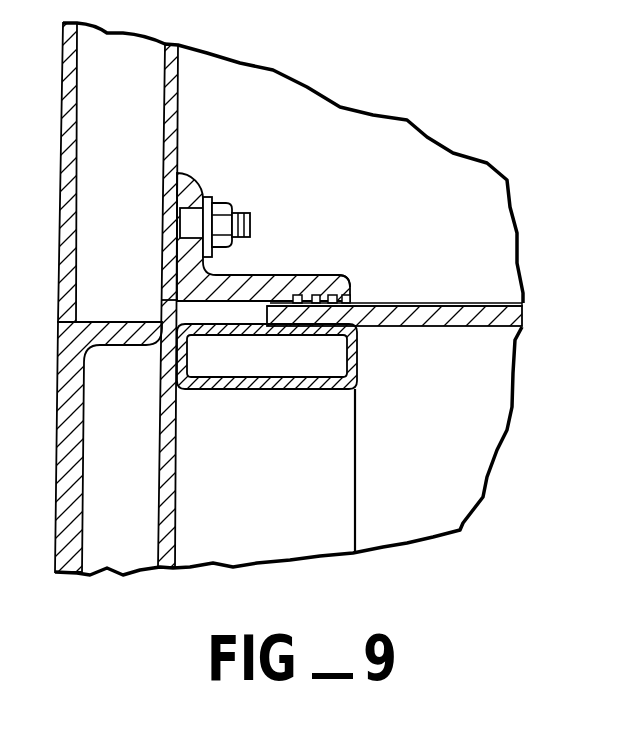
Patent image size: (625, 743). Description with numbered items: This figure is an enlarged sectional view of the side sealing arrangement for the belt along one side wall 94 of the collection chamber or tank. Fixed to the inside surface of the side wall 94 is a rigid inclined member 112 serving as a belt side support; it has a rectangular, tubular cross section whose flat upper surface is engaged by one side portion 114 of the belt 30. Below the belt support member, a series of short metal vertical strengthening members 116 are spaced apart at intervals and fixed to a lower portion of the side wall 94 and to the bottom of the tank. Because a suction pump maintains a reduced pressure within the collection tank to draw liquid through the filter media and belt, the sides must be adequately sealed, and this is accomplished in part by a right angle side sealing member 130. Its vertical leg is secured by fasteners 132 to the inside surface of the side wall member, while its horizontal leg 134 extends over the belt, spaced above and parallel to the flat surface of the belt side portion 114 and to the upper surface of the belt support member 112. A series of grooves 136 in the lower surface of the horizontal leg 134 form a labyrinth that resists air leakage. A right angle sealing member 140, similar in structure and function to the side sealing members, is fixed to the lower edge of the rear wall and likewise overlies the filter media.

The belt 30 is at (443, 327).
The side wall 94 is at (178, 90).
The rigid inclined member 112 is at (287, 390).
The belt side portion 114 is at (330, 315).
The vertical strengthening member 116 is at (355, 523).
The side sealing member 130 is at (195, 178).
The fastener 132 is at (250, 224).
The horizontal leg 134 is at (290, 276).
The groove 136 is at (350, 287).
The right angle sealing member 140 is at (163, 305).